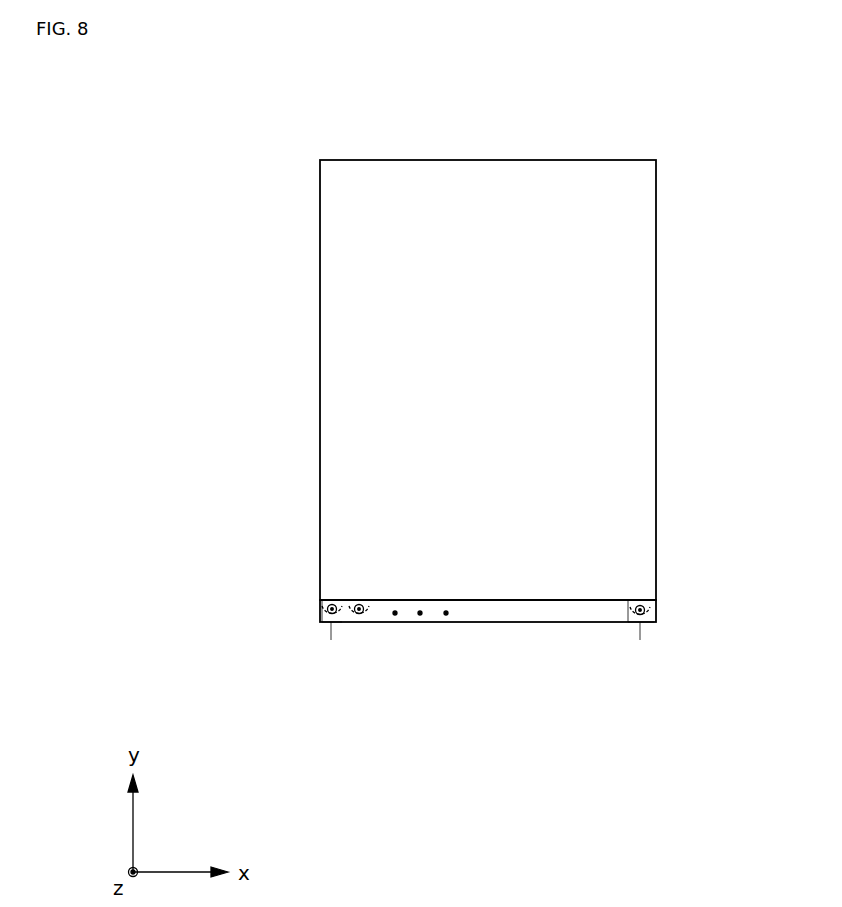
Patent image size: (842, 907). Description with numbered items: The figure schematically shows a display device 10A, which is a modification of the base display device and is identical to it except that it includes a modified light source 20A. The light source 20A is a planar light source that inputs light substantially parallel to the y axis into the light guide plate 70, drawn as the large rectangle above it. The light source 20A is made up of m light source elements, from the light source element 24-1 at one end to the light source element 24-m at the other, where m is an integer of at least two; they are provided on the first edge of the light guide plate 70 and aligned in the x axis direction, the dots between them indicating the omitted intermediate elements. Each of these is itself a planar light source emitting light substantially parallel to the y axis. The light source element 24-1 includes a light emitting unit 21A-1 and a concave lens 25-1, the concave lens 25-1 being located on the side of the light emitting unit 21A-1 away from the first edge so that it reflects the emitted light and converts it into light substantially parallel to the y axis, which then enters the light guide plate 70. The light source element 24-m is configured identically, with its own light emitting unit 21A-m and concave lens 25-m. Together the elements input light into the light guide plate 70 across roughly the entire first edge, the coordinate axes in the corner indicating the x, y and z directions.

The display device 10A is at (752, 104).
The light guide plate 70 is at (657, 200).
The light source 20A is at (493, 639).
The light emitting unit 21A-1 is at (337, 606).
The light emitting unit 21A-m is at (646, 606).
The light source element 24-1 is at (331, 636).
The light source element 24-m is at (640, 636).
The concave lens 25-1 is at (322, 620).
The concave lens 25-m is at (632, 620).